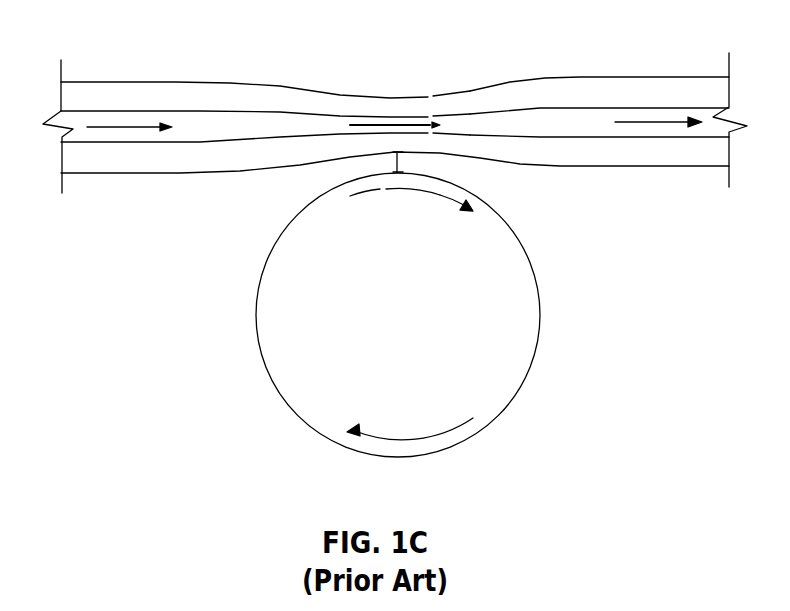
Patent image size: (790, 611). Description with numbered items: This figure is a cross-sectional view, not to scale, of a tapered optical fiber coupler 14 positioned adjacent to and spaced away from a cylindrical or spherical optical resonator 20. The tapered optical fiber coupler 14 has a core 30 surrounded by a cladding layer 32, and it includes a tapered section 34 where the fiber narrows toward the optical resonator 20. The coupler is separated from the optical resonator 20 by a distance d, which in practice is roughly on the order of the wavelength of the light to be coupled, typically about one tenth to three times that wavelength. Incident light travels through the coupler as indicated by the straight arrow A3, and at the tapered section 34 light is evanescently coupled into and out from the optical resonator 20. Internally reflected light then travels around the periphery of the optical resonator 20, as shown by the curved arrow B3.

The tapered optical fiber coupler 14 is at (395, 103).
The cladding layer 32 is at (86, 93).
The core 30 is at (218, 127).
The tapered section 34 is at (436, 76).
The optical resonator 20 is at (542, 312).
The straight arrow A3 is at (115, 128).
The curved arrow B3 is at (435, 193).
The distance d is at (400, 158).